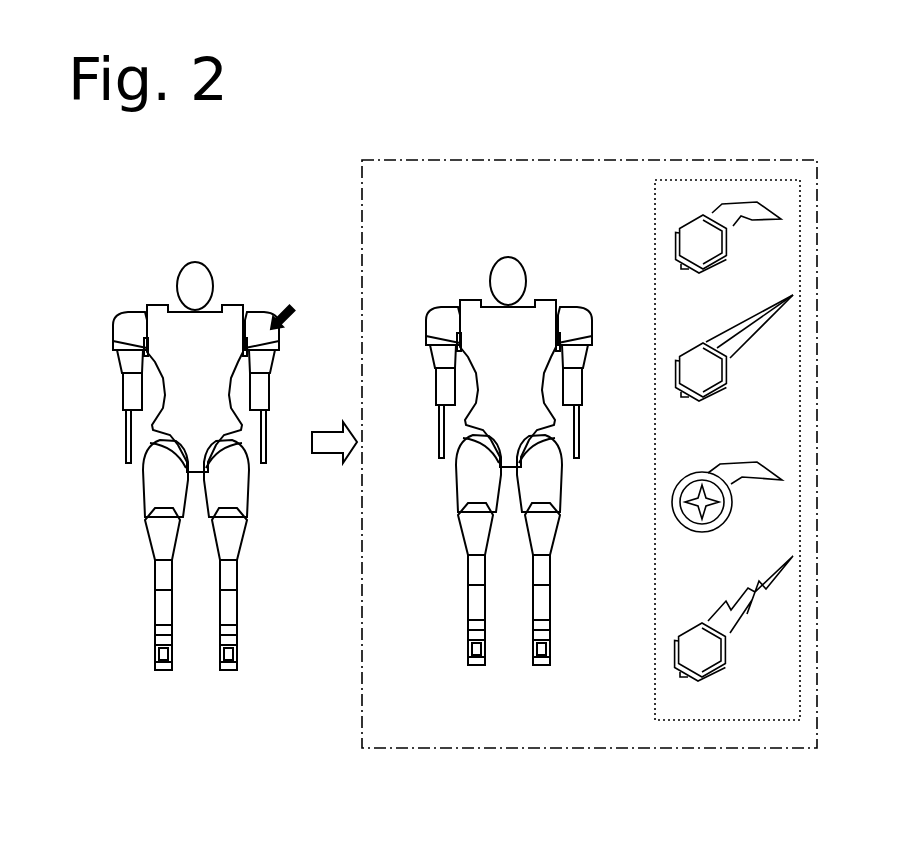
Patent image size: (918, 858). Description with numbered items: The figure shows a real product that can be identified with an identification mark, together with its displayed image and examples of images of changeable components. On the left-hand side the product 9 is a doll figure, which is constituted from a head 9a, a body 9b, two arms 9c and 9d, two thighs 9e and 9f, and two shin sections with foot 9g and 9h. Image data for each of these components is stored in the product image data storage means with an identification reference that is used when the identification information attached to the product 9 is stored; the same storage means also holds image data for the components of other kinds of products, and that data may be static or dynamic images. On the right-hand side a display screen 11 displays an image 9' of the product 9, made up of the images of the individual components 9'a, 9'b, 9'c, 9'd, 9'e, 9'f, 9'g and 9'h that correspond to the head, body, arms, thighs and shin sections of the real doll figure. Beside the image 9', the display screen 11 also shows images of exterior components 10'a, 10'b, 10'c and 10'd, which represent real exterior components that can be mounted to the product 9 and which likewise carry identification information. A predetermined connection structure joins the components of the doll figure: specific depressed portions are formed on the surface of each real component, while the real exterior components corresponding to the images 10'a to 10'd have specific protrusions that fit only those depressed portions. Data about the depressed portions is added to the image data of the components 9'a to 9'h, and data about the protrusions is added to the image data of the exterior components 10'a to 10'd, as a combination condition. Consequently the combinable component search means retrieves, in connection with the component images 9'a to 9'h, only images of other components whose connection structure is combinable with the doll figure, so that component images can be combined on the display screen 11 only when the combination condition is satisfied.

The product 9 is at (196, 454).
The head 9a is at (208, 270).
The body 9b is at (217, 366).
The arm 9c is at (113, 333).
The arm 9d is at (270, 330).
The thigh 9e is at (148, 500).
The thigh 9f is at (238, 498).
The shin section with foot 9g is at (158, 578).
The shin section with foot 9h is at (235, 577).
The image of the product 9' is at (509, 447).
The image of head component 9'a is at (541, 273).
The image of body component 9'b is at (564, 344).
The image of arm component 9'c is at (415, 382).
The image of arm component 9'd is at (593, 362).
The image of thigh component 9'e is at (453, 495).
The image of thigh component 9'f is at (568, 495).
The image of shin section with foot component 9'g is at (447, 610).
The image of shin section with foot component 9'h is at (577, 609).
The image of exterior component 10'a is at (785, 237).
The image of exterior component 10'b is at (785, 348).
The image of exterior component 10'c is at (782, 497).
The image of exterior component 10'd is at (784, 618).
The display screen 11 is at (356, 722).